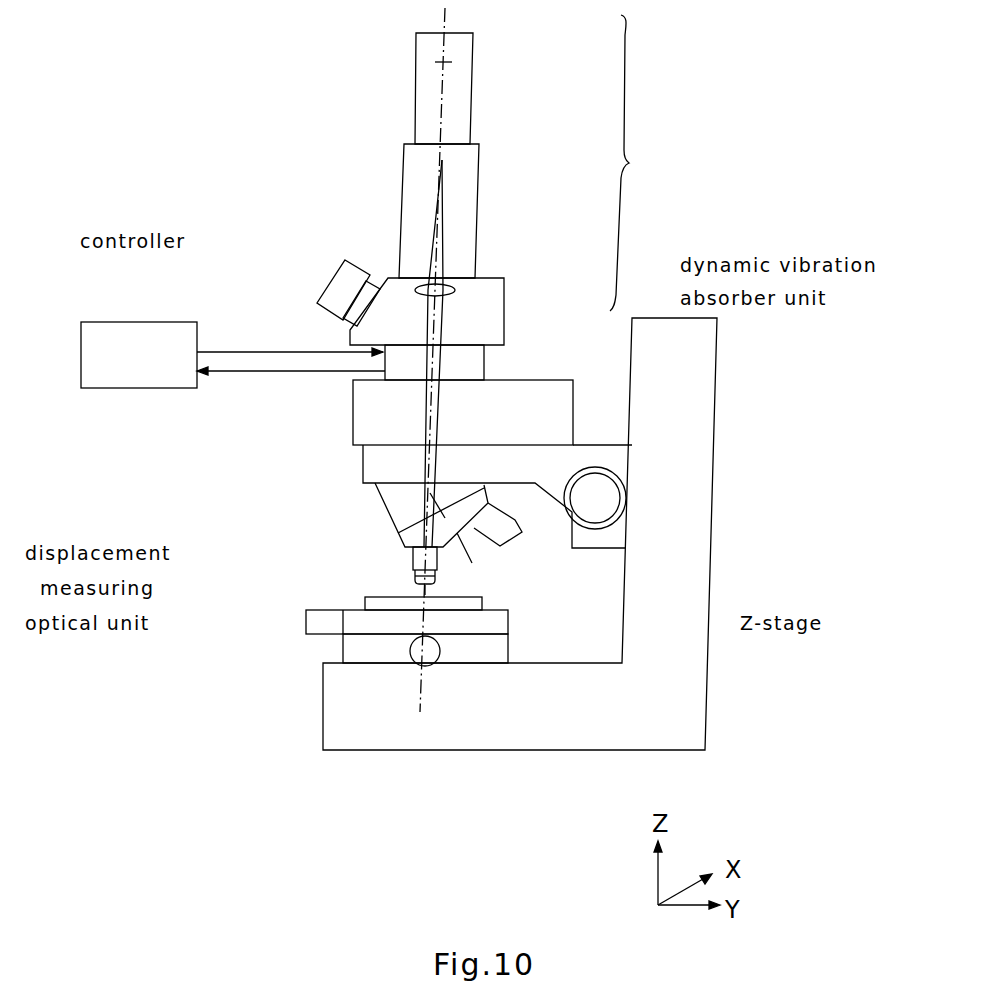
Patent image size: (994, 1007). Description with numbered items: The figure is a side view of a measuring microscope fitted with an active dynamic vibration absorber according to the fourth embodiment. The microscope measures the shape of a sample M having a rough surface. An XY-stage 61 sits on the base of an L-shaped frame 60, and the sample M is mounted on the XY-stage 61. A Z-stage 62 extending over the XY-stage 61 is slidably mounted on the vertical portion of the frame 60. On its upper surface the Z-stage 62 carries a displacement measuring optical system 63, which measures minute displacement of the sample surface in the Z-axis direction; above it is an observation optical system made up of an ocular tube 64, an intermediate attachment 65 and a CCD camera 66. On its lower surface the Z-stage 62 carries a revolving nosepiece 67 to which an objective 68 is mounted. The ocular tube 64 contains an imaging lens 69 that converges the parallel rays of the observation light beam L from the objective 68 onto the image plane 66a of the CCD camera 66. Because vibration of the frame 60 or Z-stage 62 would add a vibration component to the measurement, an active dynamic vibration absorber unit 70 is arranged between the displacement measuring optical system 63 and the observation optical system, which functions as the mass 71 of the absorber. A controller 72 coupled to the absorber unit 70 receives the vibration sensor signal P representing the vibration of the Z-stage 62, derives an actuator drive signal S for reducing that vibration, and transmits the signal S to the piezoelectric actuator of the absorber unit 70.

The L-shaped frame 60 is at (717, 480).
The XY-stage 61 is at (340, 655).
The Z-stage 62 is at (613, 540).
The displacement measuring optical system 63 is at (353, 440).
The ocular tube 64 is at (504, 288).
The intermediate attachment 65 is at (479, 183).
The CCD camera 66 is at (473, 105).
The image plane 66a is at (452, 62).
The revolving nosepiece 67 is at (388, 523).
The objective 68 is at (413, 565).
The imaging lens 69 is at (455, 278).
The active dynamic vibration absorber unit 70 is at (484, 370).
The mass 71 is at (640, 163).
The controller 72 is at (140, 322).
The observation light beam L is at (433, 242).
The actuator drive signal S is at (236, 350).
The vibration sensor signal P is at (223, 373).
The sample M is at (362, 602).